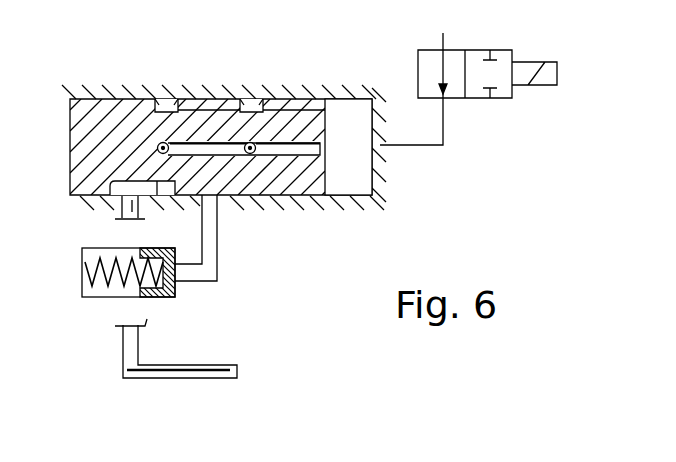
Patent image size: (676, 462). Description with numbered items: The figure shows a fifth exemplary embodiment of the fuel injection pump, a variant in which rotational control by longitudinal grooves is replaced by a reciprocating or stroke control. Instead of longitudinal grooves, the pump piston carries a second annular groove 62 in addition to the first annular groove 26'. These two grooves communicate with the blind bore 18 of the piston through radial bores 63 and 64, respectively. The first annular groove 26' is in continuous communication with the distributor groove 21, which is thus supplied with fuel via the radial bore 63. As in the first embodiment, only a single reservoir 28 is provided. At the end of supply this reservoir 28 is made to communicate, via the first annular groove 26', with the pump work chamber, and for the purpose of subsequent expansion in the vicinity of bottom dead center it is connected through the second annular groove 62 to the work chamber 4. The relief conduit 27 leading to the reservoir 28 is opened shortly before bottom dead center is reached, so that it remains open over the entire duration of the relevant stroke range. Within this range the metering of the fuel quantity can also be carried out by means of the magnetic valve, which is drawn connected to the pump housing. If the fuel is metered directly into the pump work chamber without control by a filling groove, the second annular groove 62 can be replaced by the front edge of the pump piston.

The work chamber 4 is at (358, 171).
The blind bore 18 is at (300, 156).
The distributor groove 21 is at (117, 197).
The first annular groove 26' is at (171, 77).
The relief conduit 27 is at (217, 261).
The reservoir 28 is at (180, 288).
The second annular groove 62 is at (253, 99).
The radial bore 63 is at (158, 143).
The radial bore 64 is at (256, 143).